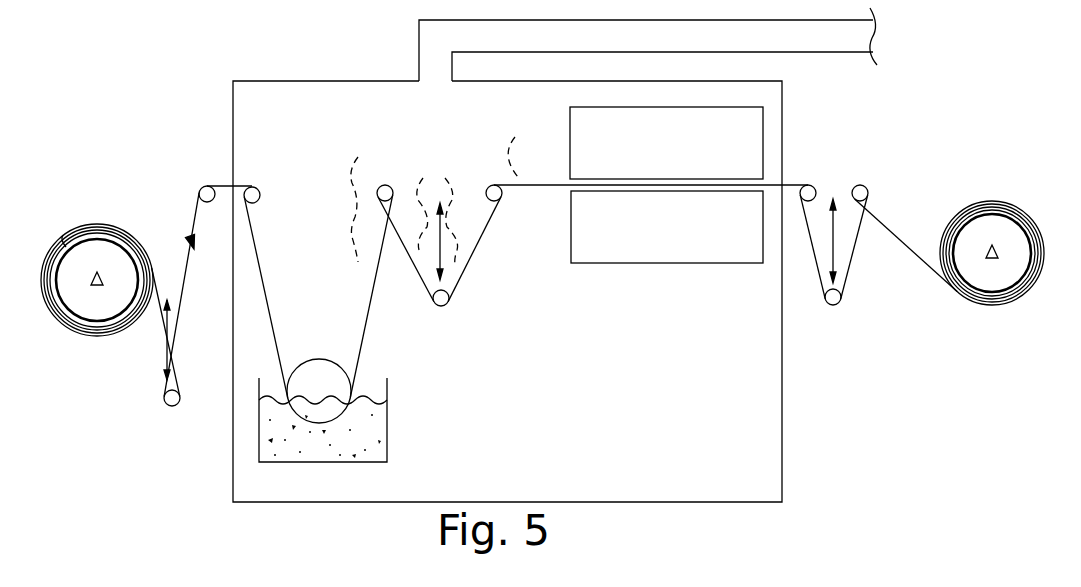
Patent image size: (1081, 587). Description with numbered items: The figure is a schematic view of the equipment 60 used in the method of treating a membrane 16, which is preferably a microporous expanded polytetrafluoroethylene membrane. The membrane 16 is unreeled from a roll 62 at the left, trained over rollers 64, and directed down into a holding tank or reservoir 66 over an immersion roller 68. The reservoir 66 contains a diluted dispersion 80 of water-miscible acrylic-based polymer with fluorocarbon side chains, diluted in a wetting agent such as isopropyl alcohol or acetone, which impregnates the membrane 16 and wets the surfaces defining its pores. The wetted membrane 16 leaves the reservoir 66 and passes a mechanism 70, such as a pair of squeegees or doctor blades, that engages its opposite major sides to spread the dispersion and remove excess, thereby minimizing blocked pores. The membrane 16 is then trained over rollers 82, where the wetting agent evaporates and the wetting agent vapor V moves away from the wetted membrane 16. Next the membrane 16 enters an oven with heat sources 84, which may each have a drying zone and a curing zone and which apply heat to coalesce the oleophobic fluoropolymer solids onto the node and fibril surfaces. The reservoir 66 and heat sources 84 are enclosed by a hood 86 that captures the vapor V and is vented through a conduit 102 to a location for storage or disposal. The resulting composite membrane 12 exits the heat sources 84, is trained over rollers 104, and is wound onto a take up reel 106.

The equipment 60 is at (203, 97).
The hood 86 is at (302, 80).
The conduit 102 is at (787, 50).
The heat sources 84 is at (570, 133).
The roll 62 is at (117, 327).
The membrane 16 is at (191, 243).
The rollers 64 is at (209, 186).
The mechanism 70 is at (366, 268).
The wetting agent vapor V is at (357, 198).
The immersion roller 68 is at (325, 377).
The holding tank or reservoir 66 is at (387, 392).
The diluted dispersion 80 is at (373, 442).
The rollers 82 is at (490, 187).
The rollers 104 is at (812, 197).
The composite membrane 12 is at (898, 200).
The take up reel 106 is at (998, 307).